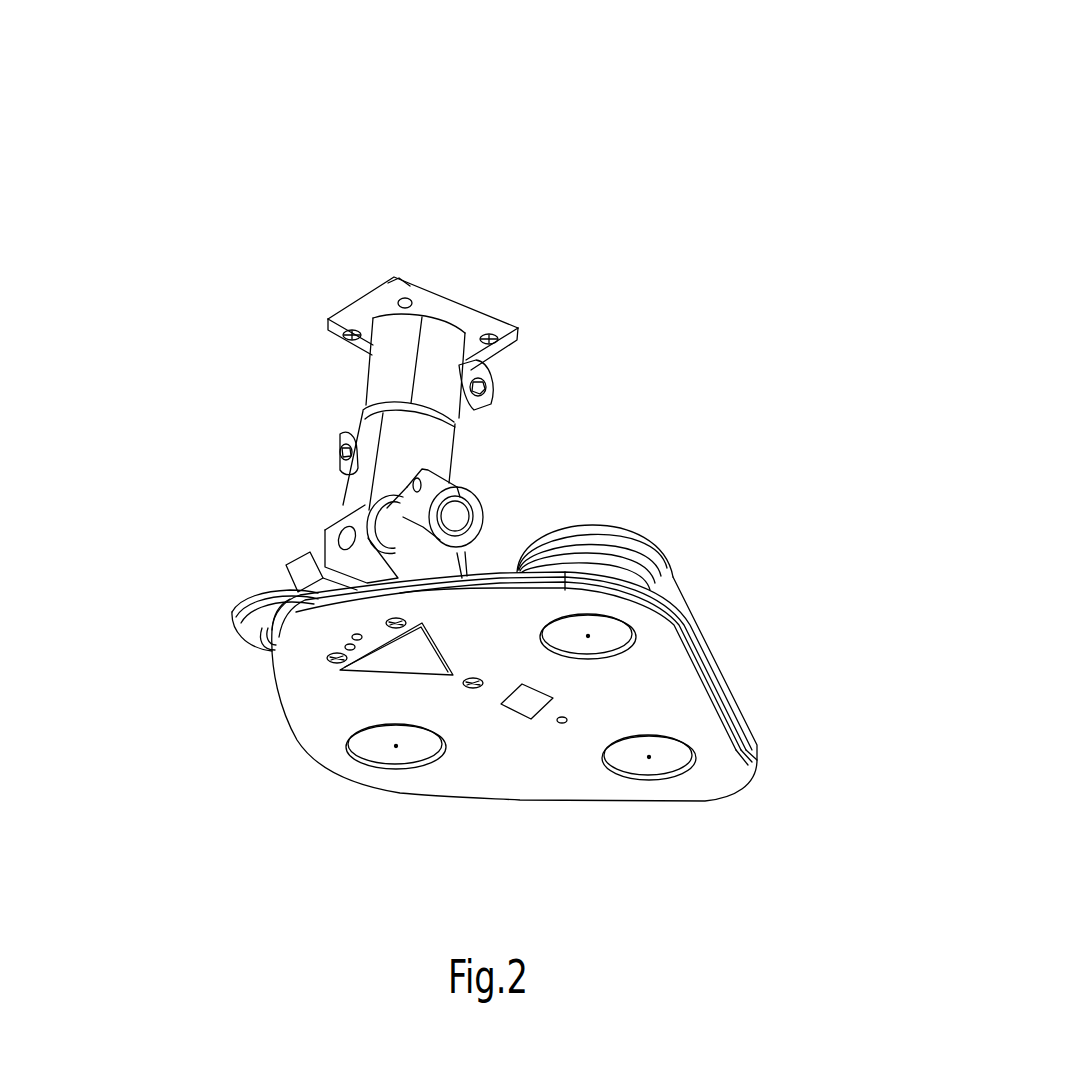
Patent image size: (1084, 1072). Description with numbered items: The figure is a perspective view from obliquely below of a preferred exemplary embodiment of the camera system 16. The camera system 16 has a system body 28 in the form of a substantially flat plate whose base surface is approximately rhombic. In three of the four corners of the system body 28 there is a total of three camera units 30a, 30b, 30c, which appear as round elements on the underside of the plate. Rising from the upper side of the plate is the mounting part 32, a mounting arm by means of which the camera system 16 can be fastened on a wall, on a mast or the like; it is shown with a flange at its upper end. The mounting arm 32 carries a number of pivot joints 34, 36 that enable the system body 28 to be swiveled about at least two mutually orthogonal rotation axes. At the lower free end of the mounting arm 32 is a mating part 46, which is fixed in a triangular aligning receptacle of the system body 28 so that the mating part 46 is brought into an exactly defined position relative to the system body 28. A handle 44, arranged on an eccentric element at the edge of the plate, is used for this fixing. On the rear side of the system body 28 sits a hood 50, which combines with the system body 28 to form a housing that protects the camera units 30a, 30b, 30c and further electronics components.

The camera system 16 is at (673, 178).
The system body 28 is at (532, 784).
The camera unit 30a is at (673, 760).
The camera unit 30b is at (378, 752).
The camera unit 30c is at (614, 645).
The mounting part 32 is at (448, 287).
The pivot joint 34 is at (476, 510).
The pivot joint 36 is at (361, 408).
The handle 44 is at (232, 626).
The mating part 46 is at (396, 652).
The hood 50 is at (643, 537).